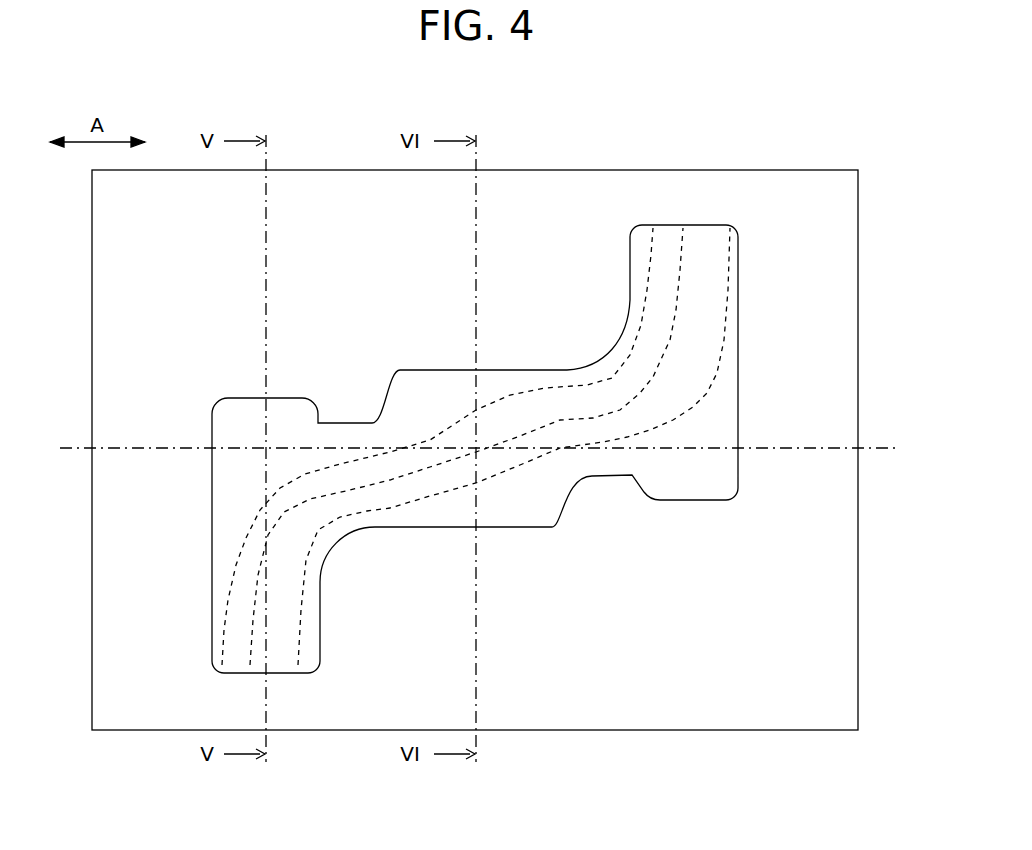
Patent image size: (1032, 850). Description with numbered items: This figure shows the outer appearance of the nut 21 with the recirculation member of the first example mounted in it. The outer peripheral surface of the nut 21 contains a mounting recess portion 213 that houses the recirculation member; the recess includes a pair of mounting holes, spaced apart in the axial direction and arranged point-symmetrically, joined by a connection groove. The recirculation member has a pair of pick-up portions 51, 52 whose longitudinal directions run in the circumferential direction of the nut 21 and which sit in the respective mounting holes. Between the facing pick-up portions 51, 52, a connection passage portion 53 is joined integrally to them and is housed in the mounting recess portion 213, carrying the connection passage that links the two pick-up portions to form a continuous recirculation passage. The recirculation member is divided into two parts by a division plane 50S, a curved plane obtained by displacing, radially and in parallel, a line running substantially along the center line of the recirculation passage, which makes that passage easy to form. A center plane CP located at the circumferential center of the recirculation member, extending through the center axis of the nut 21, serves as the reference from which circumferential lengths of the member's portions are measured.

The nut 21 is at (670, 655).
The mounting recess portion 213 is at (476, 464).
The pick-up portion 51 is at (256, 497).
The pick-up portion 52 is at (700, 430).
The connection passage portion 53 is at (512, 483).
The division plane 50S is at (680, 297).
The center plane CP is at (168, 448).